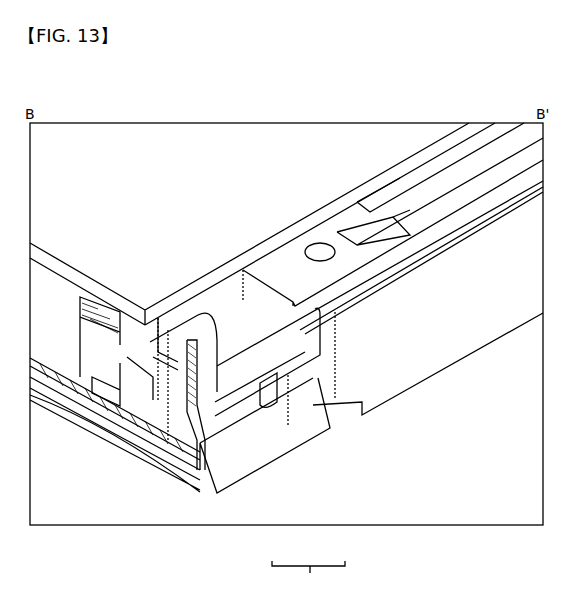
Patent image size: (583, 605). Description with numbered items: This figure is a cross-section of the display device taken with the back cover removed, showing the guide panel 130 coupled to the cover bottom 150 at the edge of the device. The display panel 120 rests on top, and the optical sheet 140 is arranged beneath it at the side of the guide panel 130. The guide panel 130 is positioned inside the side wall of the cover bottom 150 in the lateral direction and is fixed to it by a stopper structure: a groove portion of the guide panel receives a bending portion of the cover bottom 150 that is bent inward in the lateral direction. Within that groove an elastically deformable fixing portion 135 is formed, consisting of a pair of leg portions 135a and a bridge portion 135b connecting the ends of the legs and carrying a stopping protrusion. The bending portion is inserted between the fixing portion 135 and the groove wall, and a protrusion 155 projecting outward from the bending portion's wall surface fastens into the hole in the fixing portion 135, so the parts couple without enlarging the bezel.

The display panel 120 is at (56, 262).
The guide panel 130 is at (97, 343).
The fixing portion 135 is at (308, 579).
The leg portions 135a is at (300, 390).
The bridge portion 135b is at (282, 440).
The optical sheet 140 is at (96, 416).
The cover bottom 150 is at (45, 414).
The protrusion 155 is at (240, 425).